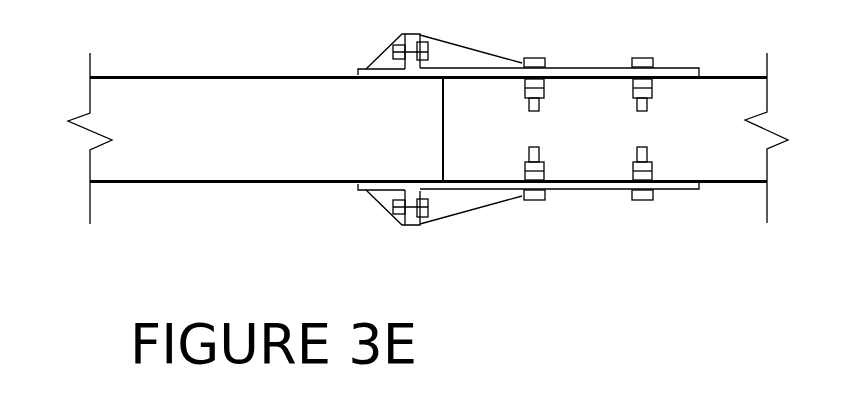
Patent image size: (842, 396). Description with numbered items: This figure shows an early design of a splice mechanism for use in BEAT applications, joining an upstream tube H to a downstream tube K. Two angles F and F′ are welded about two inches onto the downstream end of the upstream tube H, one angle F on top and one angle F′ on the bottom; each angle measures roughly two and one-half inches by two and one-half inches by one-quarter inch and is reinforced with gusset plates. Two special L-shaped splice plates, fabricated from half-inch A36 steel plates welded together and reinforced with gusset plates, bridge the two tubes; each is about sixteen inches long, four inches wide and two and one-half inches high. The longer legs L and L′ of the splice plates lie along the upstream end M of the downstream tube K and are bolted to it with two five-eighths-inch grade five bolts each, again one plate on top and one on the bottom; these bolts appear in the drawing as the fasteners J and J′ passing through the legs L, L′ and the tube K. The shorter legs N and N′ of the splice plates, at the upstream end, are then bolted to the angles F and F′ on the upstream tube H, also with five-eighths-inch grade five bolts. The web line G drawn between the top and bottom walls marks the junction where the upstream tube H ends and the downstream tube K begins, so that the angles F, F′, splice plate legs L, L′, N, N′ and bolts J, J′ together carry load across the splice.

The angle F is at (375, 72).
The angle F′ is at (385, 186).
The shorter leg N is at (427, 42).
The shorter leg N′ is at (432, 228).
The longer leg L is at (486, 72).
The longer leg L′ is at (477, 190).
The bolt J is at (580, 68).
The bolt (lower) J′ is at (580, 189).
The beam web G is at (443, 127).
The upstream end M is at (445, 145).
The upstream tube H is at (268, 183).
The downstream tube K is at (748, 183).